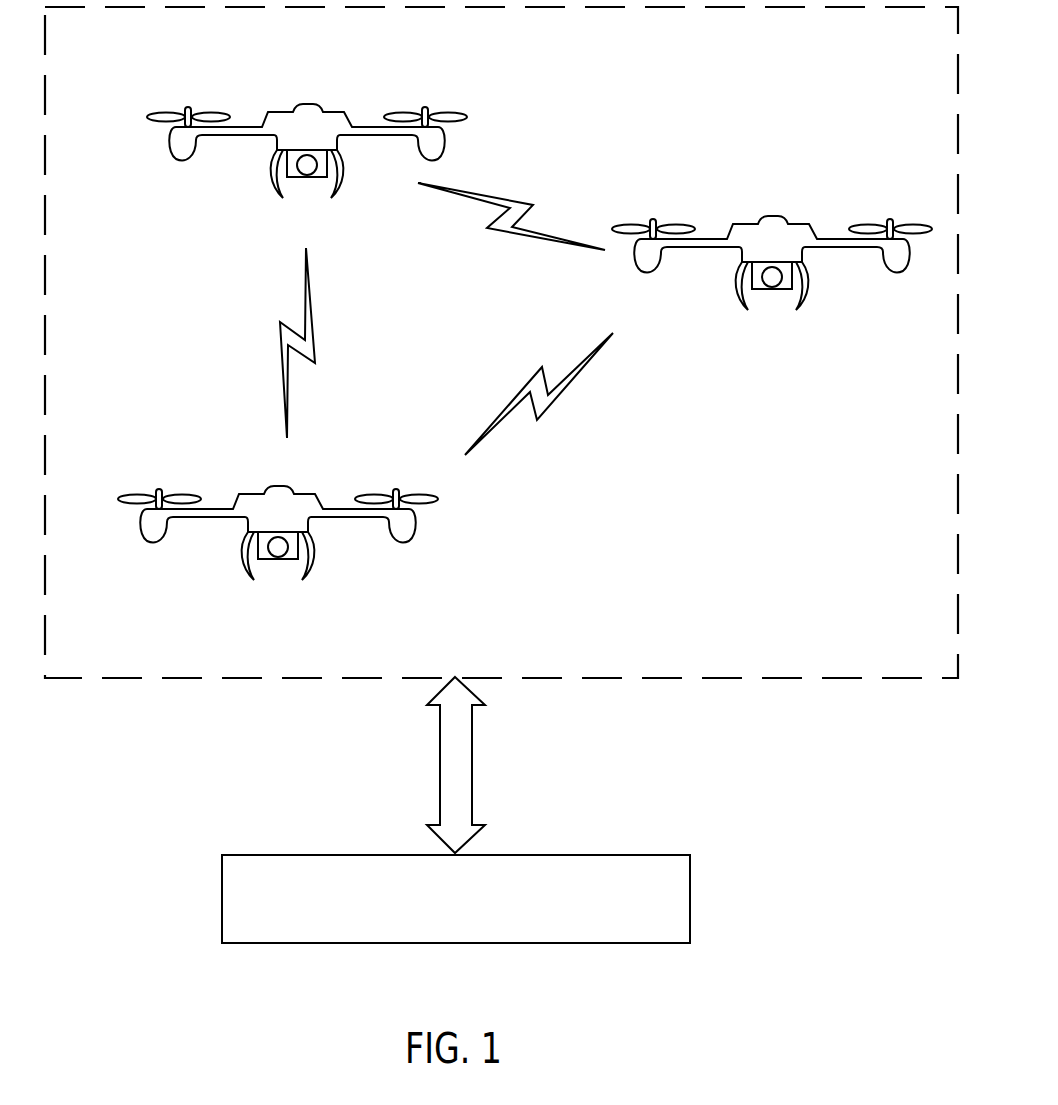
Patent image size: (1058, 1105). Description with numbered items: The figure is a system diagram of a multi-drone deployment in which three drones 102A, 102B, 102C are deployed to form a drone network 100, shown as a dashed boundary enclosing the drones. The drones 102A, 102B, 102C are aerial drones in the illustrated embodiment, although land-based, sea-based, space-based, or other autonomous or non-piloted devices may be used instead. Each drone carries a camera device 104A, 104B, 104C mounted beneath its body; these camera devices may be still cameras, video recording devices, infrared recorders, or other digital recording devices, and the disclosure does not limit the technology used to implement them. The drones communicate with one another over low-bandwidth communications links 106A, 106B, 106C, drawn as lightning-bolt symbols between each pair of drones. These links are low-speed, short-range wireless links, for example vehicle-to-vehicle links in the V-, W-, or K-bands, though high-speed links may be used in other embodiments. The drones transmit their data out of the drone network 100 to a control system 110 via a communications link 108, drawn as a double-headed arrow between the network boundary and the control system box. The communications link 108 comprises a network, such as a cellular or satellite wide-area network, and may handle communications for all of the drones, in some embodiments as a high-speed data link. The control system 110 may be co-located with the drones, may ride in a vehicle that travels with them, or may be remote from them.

The drone network 100 is at (953, 671).
The drone 102A is at (262, 120).
The drone 102B is at (727, 232).
The drone 102C is at (233, 502).
The camera device 104A is at (307, 177).
The camera device 104B is at (772, 289).
The camera device 104C is at (278, 559).
The low-bandwidth communications link 106A is at (282, 363).
The low-bandwidth communications link 106B is at (503, 412).
The low-bandwidth communications link 106C is at (582, 170).
The communications link 108 is at (466, 750).
The control system 110 is at (568, 911).